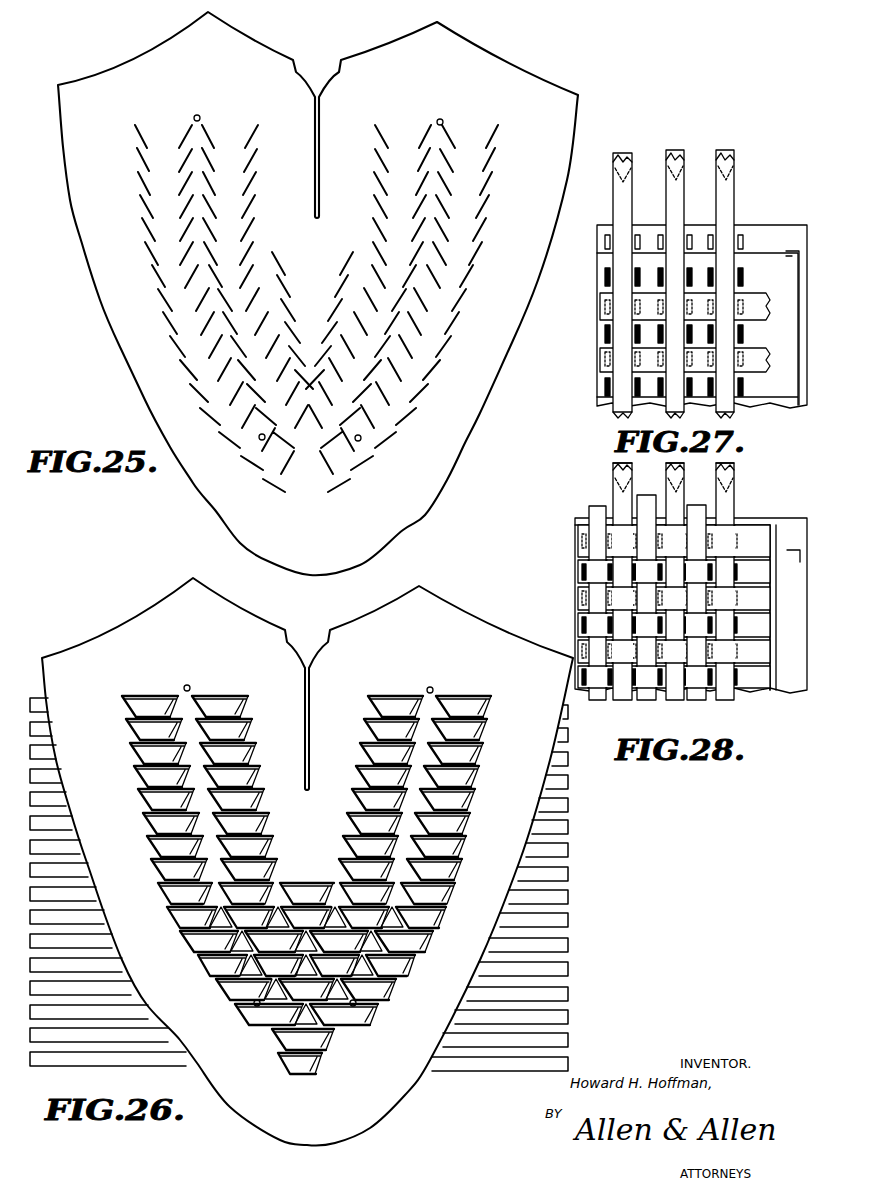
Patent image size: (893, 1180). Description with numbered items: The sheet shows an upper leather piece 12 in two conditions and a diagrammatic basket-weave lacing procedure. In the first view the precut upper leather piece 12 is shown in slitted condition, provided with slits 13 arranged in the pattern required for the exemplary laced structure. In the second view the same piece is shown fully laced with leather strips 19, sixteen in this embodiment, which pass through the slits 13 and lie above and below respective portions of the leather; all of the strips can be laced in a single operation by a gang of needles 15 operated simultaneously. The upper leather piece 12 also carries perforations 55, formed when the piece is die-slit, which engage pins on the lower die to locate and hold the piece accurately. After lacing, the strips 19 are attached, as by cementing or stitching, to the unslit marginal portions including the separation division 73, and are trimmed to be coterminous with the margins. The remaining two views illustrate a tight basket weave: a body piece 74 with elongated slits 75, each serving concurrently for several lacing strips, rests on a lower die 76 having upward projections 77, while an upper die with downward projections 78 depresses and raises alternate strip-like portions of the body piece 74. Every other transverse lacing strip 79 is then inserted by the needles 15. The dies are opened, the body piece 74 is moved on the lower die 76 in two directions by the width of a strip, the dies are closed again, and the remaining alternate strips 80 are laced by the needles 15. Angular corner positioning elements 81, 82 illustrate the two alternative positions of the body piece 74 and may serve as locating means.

In FIG. 25, the upper leather piece 12 is at (466, 452).
In FIG. 26, the upper leather piece 12 is at (378, 1112).
In FIG. 25, the slits 13 is at (323, 345).
In FIG. 26, the slits 13 is at (148, 845).
In FIG. 27, the needles 15 is at (624, 158).
In FIG. 28, the needles 15 is at (614, 466).
In FIG. 26, the leather strips 19 is at (80, 847).
In FIG. 26, the perforations 55 is at (190, 686).
In FIG. 26, the separation division 73 is at (309, 748).
In FIG. 27, the body piece 74 is at (780, 406).
In FIG. 28, the body piece 74 is at (752, 702).
In FIG. 27, the elongated slits 75 is at (770, 300).
In FIG. 28, the elongated slits 75 is at (746, 611).
In FIG. 27, the lower die 76 is at (808, 224).
In FIG. 28, the lower die 76 is at (796, 519).
In FIG. 27, the upward projections 77 is at (605, 276).
In FIG. 28, the upward projections 77 is at (580, 545).
In FIG. 27, the downward projections 78 is at (605, 286).
In FIG. 28, the downward projections 78 is at (578, 570).
In FIG. 27, the transverse lacing strip 79 is at (631, 212).
In FIG. 28, the transverse lacing strip 79 is at (594, 690).
In FIG. 28, the remaining alternate strips 80 is at (717, 490).
In FIG. 27, the angular corner positioning element 81 is at (784, 249).
In FIG. 28, the angular corner positioning element 81 is at (768, 525).
In FIG. 27, the angular corner positioning element 82 is at (790, 241).
In FIG. 28, the angular corner positioning element 82 is at (789, 572).